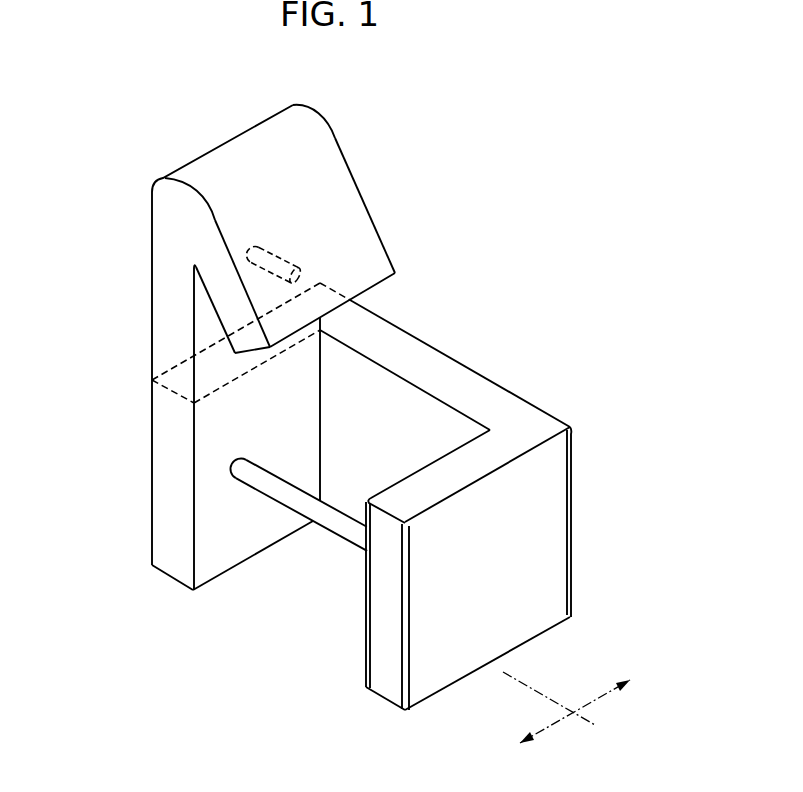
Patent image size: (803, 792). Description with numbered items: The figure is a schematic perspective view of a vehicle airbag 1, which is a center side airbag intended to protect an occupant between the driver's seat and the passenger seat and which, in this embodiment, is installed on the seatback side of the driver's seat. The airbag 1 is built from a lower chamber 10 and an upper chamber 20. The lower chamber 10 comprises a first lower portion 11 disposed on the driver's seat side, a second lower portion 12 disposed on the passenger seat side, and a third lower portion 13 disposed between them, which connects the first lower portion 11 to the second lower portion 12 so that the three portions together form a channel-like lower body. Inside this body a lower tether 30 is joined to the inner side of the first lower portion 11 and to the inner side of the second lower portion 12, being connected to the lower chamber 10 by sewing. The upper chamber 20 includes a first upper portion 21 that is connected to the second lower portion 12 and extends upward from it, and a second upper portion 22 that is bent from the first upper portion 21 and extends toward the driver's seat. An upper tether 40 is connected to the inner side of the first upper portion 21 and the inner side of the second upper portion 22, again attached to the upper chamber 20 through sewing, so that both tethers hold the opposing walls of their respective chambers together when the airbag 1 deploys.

The vehicle airbag 1 is at (122, 86).
The lower chamber 10 is at (505, 373).
The first lower portion 11 is at (540, 518).
The second lower portion 12 is at (217, 521).
The third lower portion 13 is at (422, 368).
The upper chamber 20 is at (340, 118).
The first upper portion 21 is at (175, 329).
The second upper portion 22 is at (345, 198).
The lower tether 30 is at (340, 525).
The upper tether 40 is at (283, 258).